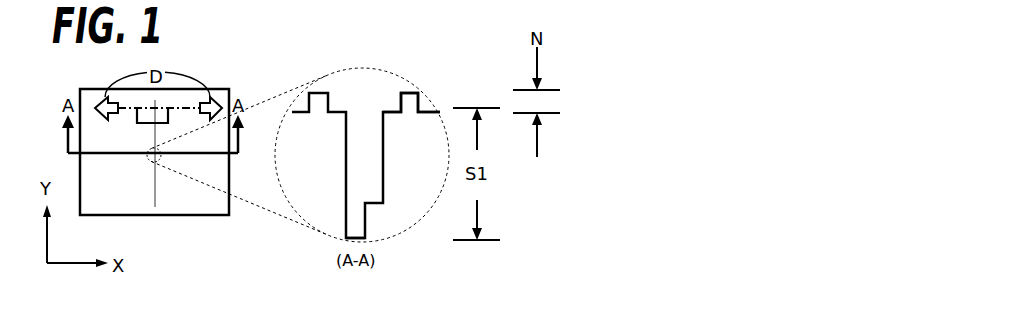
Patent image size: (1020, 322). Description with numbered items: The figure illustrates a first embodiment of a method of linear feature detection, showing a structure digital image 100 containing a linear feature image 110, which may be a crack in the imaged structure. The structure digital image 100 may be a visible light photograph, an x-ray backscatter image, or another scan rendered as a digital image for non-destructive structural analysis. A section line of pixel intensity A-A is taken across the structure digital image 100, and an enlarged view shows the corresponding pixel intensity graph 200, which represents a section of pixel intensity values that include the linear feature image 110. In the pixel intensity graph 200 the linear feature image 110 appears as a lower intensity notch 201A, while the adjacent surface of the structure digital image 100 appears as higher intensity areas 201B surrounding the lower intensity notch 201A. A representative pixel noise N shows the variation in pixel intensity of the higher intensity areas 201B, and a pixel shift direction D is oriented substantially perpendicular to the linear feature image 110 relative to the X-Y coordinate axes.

The structure digital image 100 is at (138, 208).
The linear feature image 110 is at (155, 183).
The pixel intensity graph 200 is at (395, 208).
The lower intensity notch 201A is at (346, 238).
The higher intensity areas 201B is at (392, 112).